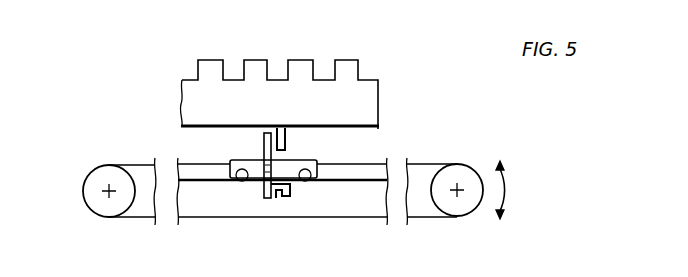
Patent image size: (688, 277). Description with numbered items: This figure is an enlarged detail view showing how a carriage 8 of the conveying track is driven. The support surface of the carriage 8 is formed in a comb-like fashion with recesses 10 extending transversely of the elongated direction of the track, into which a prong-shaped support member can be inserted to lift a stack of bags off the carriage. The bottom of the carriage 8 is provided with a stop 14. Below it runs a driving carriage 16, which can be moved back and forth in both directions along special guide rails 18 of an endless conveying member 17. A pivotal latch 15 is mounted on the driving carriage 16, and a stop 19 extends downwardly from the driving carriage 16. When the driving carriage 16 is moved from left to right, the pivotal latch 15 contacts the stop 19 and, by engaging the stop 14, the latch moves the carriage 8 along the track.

The carriage 8 is at (367, 108).
The recesses 10 is at (277, 72).
The stop 14 is at (288, 140).
The pivotal latch 15 is at (265, 195).
The driving carriage 16 is at (230, 162).
The endless conveying member 17 is at (430, 163).
The guide rails 18 is at (358, 181).
The stop 19 is at (277, 197).